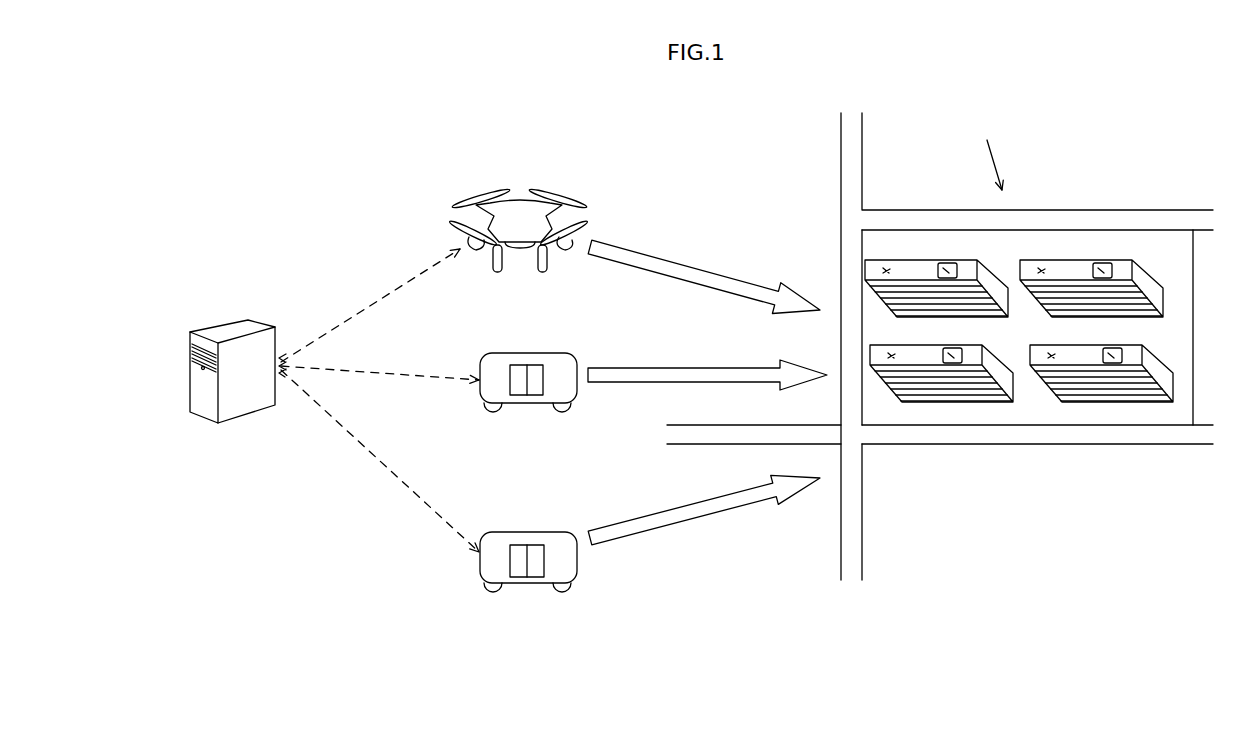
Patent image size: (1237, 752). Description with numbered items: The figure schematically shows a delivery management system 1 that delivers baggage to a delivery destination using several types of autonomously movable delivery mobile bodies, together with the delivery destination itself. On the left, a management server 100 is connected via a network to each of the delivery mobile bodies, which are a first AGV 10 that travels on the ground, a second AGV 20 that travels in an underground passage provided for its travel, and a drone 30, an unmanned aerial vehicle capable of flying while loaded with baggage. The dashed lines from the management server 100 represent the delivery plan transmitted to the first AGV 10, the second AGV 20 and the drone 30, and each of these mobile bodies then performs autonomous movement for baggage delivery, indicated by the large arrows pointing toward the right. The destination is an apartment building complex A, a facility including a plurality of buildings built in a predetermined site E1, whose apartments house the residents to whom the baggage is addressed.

The delivery management system 1 is at (315, 157).
The management server 100 is at (248, 420).
The drone 30 is at (455, 219).
The first AGV 10 is at (484, 357).
The second AGV 20 is at (489, 530).
The predetermined site E1 is at (1168, 246).